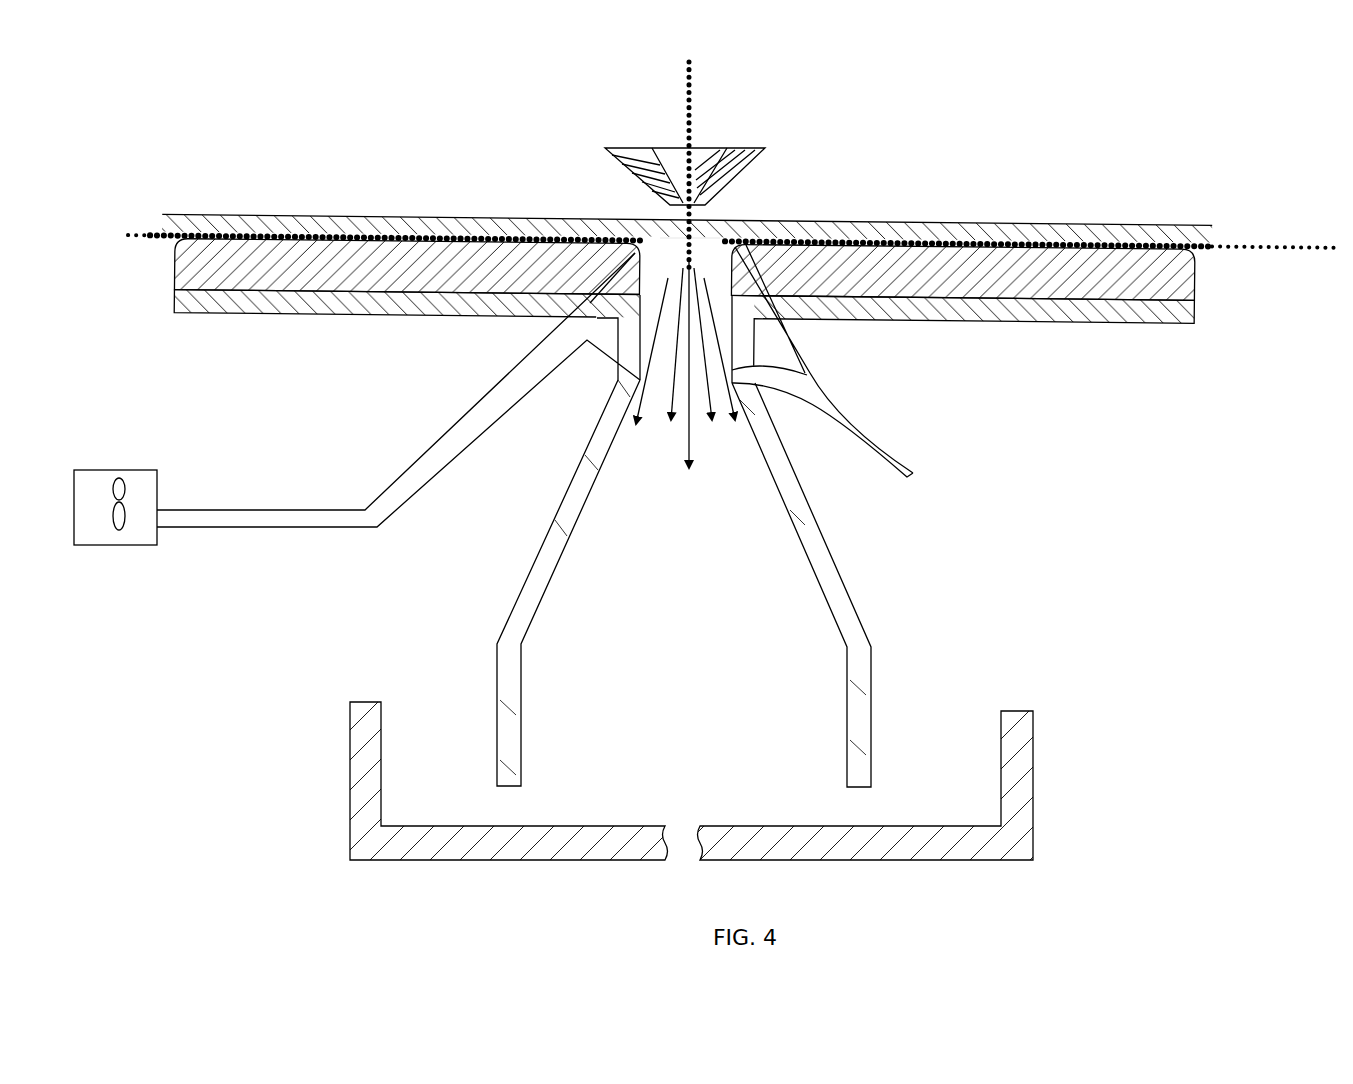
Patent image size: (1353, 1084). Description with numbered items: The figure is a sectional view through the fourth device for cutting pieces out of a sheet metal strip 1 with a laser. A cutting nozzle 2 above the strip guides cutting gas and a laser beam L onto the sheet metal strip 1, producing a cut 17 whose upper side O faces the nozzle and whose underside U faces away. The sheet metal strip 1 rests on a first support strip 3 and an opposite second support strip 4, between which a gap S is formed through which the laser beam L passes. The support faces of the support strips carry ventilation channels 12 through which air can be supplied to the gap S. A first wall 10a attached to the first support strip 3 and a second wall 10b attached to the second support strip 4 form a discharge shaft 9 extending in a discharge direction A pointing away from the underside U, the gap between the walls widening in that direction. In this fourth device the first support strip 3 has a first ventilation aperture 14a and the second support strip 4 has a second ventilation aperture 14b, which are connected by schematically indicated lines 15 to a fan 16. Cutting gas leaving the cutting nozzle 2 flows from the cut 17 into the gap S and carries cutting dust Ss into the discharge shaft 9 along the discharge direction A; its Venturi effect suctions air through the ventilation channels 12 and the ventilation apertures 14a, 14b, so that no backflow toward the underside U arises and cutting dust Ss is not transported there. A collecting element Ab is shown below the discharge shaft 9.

The sheet metal strip 1 is at (1130, 228).
The cutting nozzle 2 is at (765, 150).
The first support strip 3 is at (332, 272).
The second support strip 4 is at (945, 272).
The discharge shaft 9 is at (666, 744).
The first wall 10a is at (522, 603).
The second wall 10b is at (835, 596).
The ventilation channels 12 is at (306, 236).
The first ventilation aperture 14a is at (625, 268).
The second ventilation aperture 14b is at (780, 310).
The lines 15 is at (290, 520).
The fan 16 is at (97, 512).
The cut 17 is at (683, 233).
The discharge direction A is at (688, 381).
The collecting tray Ab is at (372, 760).
The laser beam L is at (702, 98).
The upper side O is at (1003, 224).
The gap S is at (713, 266).
The cutting dust Ss is at (661, 409).
The underside U is at (700, 236).